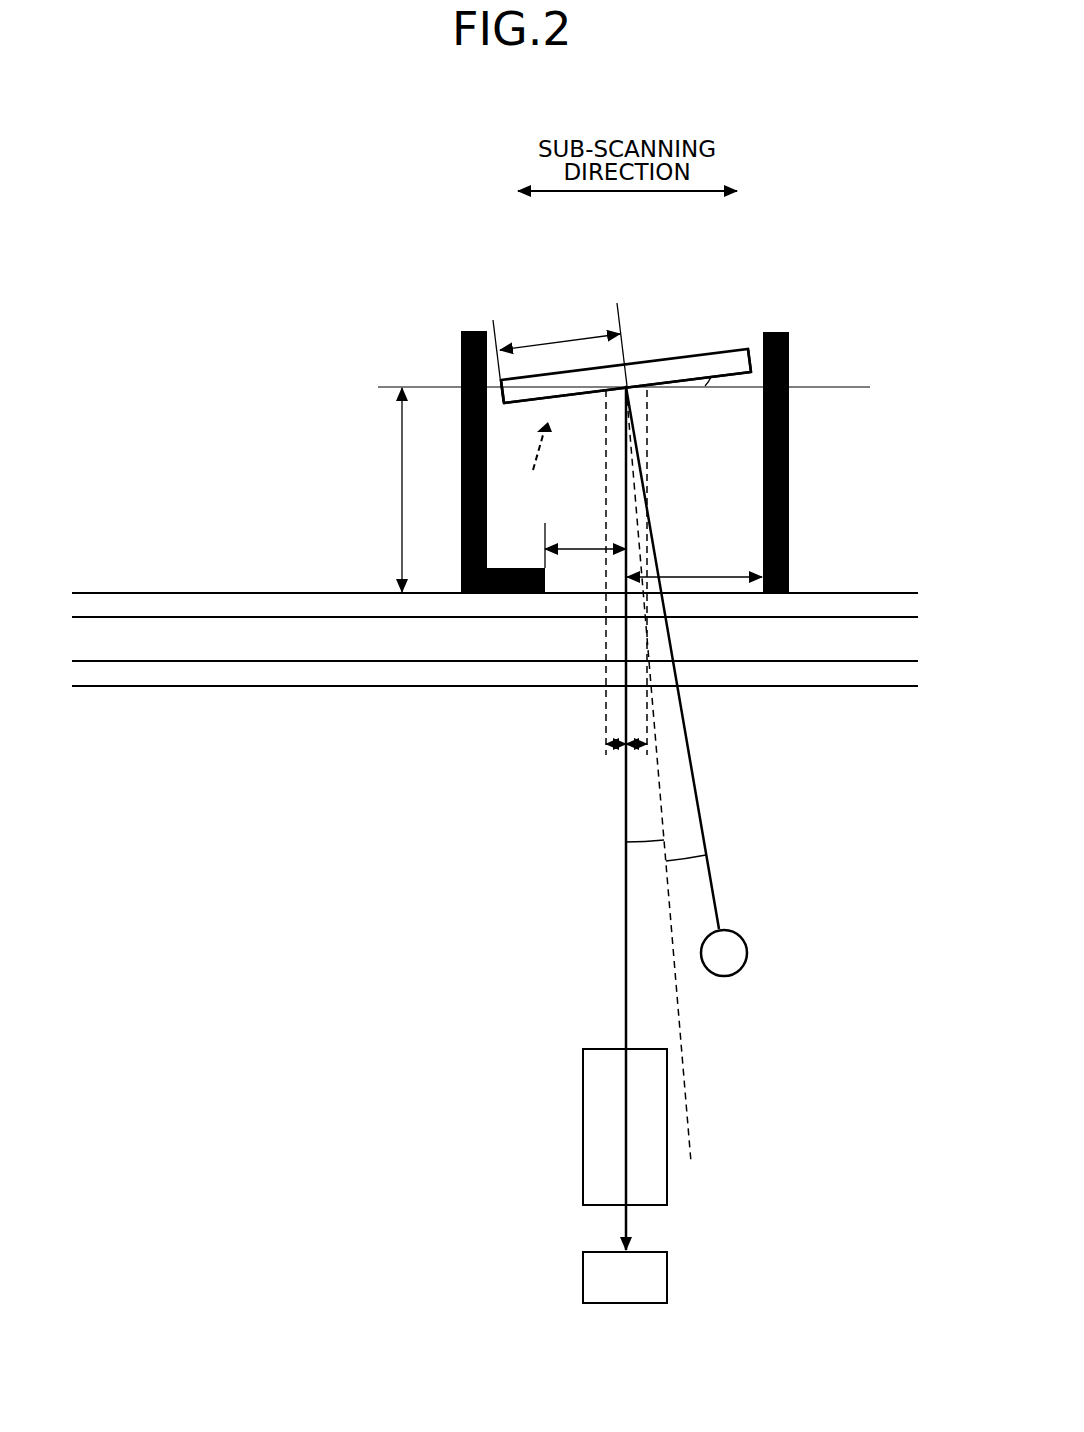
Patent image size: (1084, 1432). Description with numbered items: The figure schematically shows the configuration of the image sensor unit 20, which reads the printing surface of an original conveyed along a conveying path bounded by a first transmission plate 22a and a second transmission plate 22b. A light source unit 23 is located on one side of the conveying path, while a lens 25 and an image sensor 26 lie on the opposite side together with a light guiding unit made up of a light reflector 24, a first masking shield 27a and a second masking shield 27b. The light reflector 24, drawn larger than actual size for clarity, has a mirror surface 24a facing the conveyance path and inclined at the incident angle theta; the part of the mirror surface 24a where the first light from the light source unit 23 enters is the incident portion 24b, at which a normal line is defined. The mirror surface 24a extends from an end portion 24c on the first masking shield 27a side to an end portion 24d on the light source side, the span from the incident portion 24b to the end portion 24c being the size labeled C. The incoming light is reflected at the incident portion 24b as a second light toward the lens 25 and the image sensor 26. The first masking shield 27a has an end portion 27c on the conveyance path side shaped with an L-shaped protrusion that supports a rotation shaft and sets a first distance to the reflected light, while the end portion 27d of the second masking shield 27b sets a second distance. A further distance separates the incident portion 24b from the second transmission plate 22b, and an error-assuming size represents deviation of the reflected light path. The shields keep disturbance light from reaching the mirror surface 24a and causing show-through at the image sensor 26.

The image sensor unit 20 is at (812, 152).
The first transmission plate 22a is at (236, 675).
The second transmission plate 22b is at (233, 605).
The light source unit 23 is at (748, 953).
The light reflector 24 is at (684, 355).
The mirror surface 24a is at (738, 375).
The incident portion 24b is at (631, 390).
The end portion 24c is at (501, 388).
The end portion 24d is at (751, 360).
The lens 25 is at (583, 1130).
The image sensor 26 is at (583, 1278).
The first masking shield 27a is at (461, 340).
The second masking shield 27b is at (790, 341).
The end portion 27c is at (496, 594).
The end portion 27d is at (777, 597).